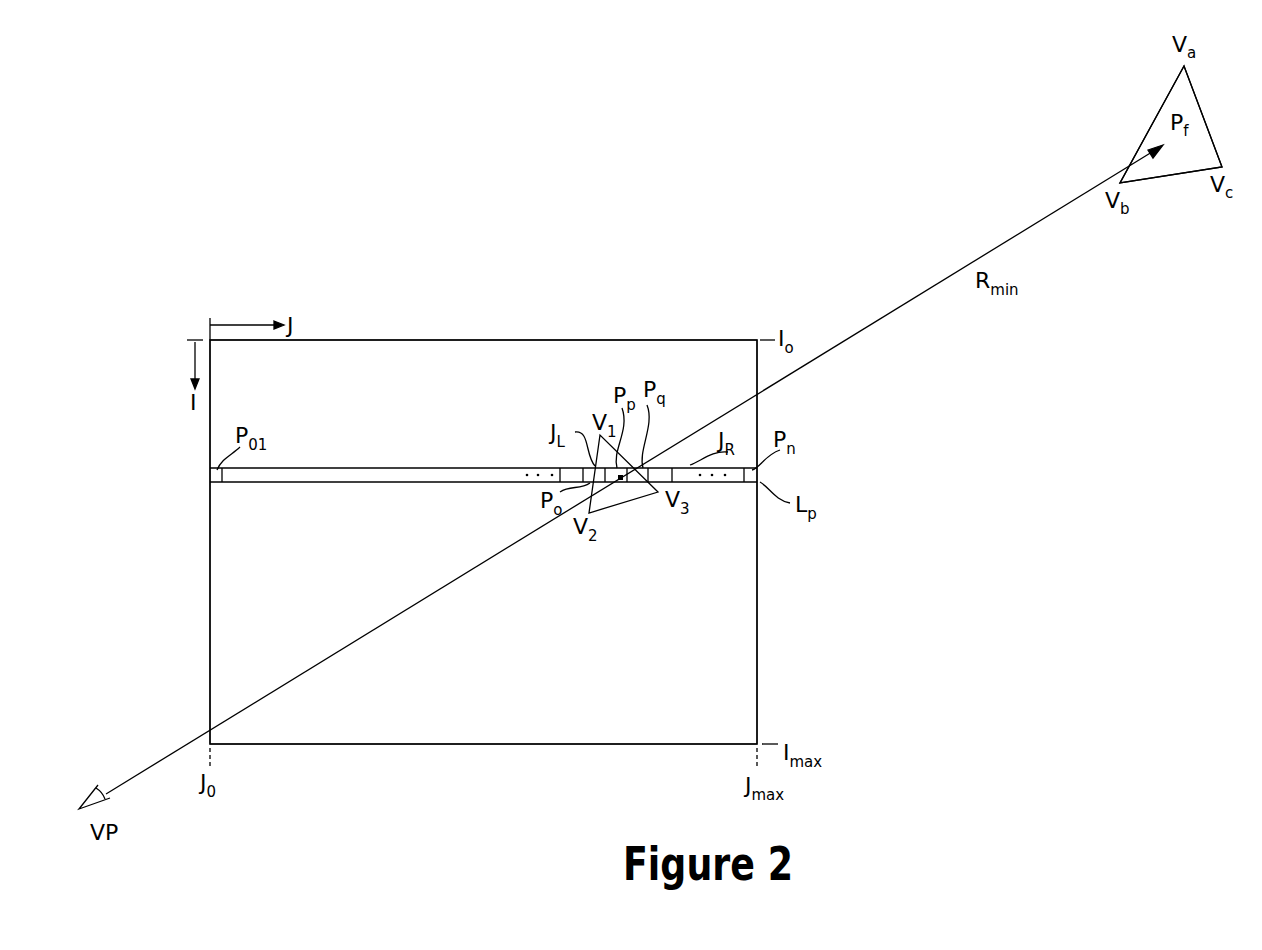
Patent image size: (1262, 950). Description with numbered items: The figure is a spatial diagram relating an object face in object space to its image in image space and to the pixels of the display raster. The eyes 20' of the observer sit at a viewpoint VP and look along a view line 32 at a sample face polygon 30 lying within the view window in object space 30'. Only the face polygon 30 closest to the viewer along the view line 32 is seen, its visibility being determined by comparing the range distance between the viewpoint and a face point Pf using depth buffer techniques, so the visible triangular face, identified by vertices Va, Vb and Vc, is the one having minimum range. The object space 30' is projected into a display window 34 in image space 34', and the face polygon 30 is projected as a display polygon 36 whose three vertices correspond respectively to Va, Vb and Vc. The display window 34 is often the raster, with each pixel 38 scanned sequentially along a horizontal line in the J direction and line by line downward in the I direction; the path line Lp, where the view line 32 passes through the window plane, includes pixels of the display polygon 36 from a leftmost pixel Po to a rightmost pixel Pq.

The eyes of the observer 20' is at (76, 788).
The face polygon 30 is at (1161, 124).
The object space 30' is at (1171, 160).
The view line 32 is at (885, 318).
The display window 34 is at (483, 517).
The image space 34' is at (483, 491).
The display polygon 36 is at (648, 483).
The pixel 38 is at (618, 483).